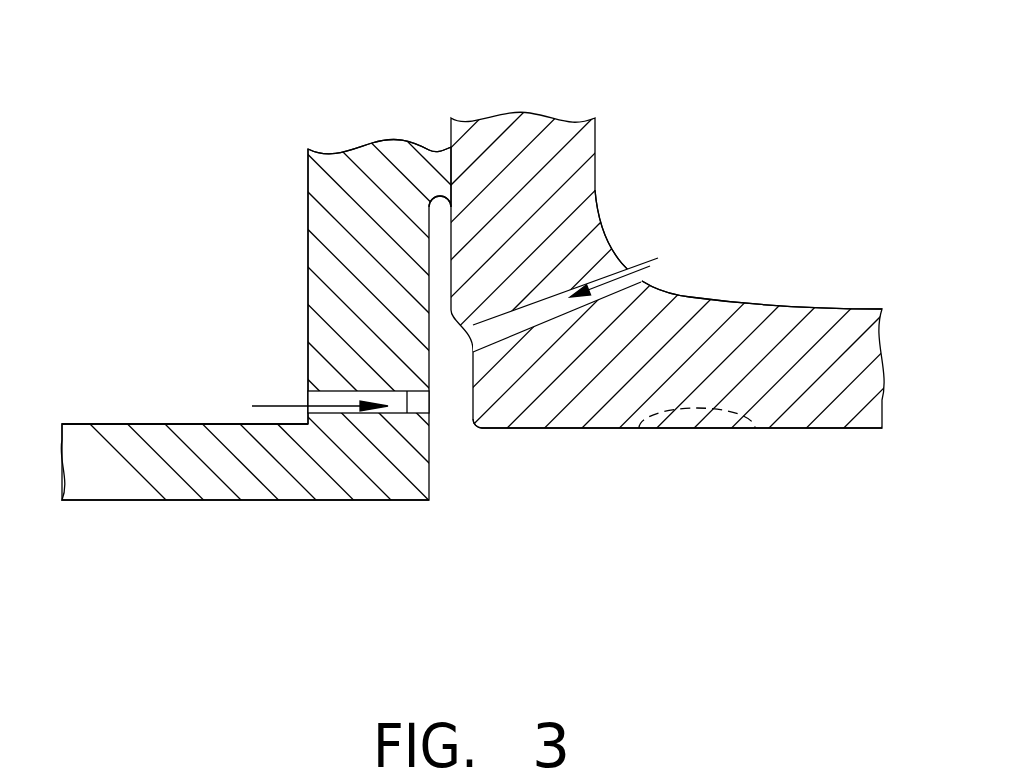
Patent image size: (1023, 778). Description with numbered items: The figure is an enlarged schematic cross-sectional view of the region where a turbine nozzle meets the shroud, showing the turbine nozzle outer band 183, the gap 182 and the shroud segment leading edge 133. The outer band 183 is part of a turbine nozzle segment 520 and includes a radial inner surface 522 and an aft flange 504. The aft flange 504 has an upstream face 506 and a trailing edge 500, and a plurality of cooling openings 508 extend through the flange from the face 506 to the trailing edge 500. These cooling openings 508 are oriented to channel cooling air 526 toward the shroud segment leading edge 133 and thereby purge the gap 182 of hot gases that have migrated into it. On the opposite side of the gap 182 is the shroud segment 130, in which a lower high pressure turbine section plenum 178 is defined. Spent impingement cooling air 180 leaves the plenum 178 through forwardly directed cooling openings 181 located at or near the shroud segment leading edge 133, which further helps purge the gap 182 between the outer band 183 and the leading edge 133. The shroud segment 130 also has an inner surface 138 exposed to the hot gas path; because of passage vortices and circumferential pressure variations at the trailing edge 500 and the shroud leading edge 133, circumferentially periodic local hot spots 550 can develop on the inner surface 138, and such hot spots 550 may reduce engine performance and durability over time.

The shroud segment 130 is at (866, 183).
The shroud segment leading edge 133 is at (472, 418).
The inner surface 138 is at (818, 428).
The lower HPTS cavity or plenum 178 is at (797, 181).
The spent impingement cooling air 180 is at (636, 272).
The forwardly directed cooling openings 181 is at (632, 272).
The gap 182 is at (453, 373).
The turbine nozzle outer band 183 is at (130, 424).
The trailing edge 500 is at (430, 467).
The aft flange 504 is at (372, 160).
The upstream face 506 is at (308, 250).
The cooling openings 508 is at (310, 393).
The turbine nozzle segment 520 is at (172, 122).
The radial inner surface 522 is at (243, 500).
The cooling air 526 is at (258, 403).
The local hot spots 550 is at (677, 425).